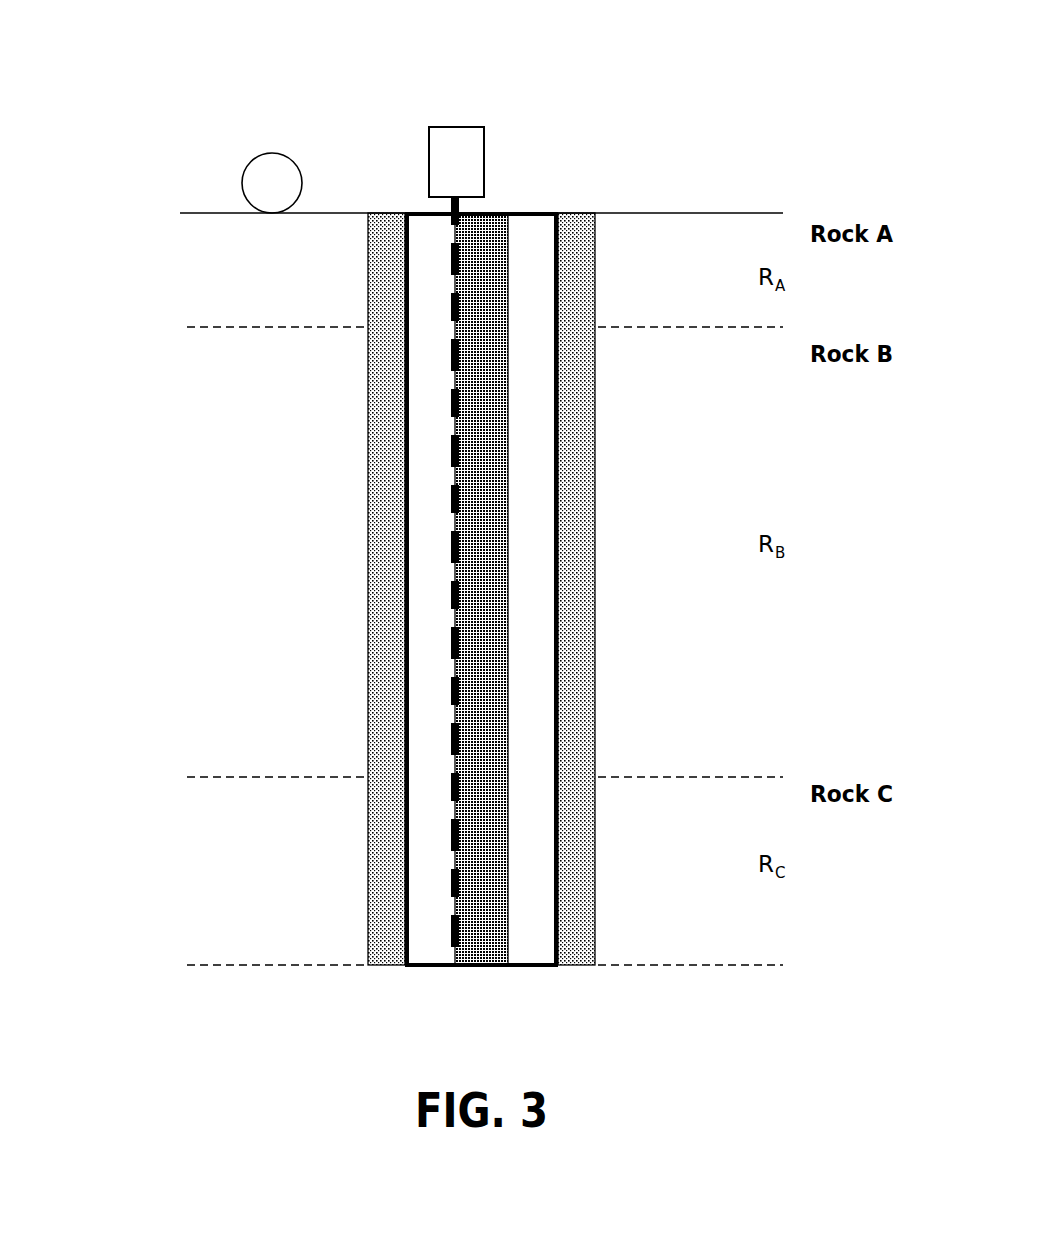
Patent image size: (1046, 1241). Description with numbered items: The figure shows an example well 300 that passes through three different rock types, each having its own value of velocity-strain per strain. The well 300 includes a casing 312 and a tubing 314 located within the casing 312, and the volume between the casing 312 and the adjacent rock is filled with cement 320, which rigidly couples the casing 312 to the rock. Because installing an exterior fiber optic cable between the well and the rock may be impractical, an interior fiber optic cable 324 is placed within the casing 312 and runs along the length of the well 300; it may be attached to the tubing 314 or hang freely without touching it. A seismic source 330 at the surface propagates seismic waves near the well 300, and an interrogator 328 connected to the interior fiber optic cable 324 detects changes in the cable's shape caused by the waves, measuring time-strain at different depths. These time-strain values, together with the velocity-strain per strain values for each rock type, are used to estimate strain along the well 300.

The well 300 is at (526, 36).
The casing 312 is at (557, 667).
The tubing 314 is at (508, 403).
The cement 320 is at (368, 755).
The interior fiber optic cable 324 is at (453, 612).
The interrogator 328 is at (484, 163).
The seismic source 330 is at (243, 180).